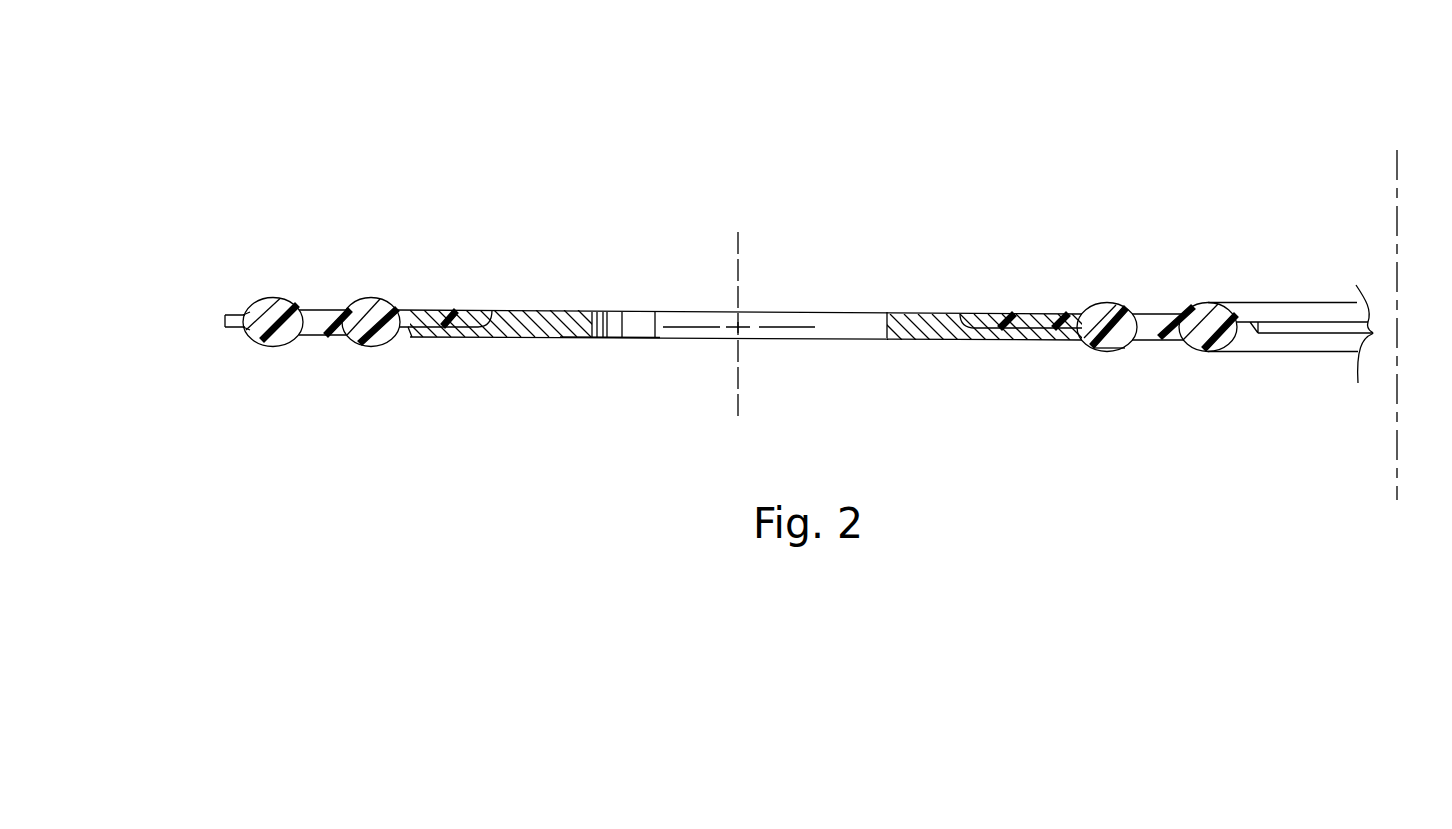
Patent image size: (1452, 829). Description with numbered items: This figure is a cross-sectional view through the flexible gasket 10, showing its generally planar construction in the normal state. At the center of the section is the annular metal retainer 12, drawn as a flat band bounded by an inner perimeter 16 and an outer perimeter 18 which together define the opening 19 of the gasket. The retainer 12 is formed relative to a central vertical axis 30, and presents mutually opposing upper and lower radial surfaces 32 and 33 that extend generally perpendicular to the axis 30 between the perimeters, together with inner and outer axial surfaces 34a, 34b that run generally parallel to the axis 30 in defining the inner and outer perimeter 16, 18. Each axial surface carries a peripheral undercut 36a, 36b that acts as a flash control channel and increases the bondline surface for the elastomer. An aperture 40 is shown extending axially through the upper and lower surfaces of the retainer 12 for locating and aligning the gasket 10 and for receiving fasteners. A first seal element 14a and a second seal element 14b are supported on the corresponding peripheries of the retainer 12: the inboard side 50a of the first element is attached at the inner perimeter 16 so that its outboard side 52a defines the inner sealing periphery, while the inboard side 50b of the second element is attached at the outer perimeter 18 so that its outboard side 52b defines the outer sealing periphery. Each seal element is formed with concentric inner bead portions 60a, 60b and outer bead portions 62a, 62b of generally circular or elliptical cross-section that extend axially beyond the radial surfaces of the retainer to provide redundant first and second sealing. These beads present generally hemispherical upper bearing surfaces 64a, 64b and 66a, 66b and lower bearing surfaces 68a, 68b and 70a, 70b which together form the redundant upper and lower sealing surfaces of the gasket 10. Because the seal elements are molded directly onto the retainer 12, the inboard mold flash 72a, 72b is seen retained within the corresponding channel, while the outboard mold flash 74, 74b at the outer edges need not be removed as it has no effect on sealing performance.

The gasket 10 is at (1198, 84).
The retainer 12 is at (547, 310).
The first seal element 14a is at (1163, 303).
The second seal element 14b is at (326, 310).
The inner perimeter 16 is at (1093, 348).
The outer perimeter 18 is at (400, 340).
The opening 19 is at (1390, 310).
The central vertical axis 30 is at (1397, 192).
The upper radial surface 32 is at (575, 310).
The lower radial surface 33 is at (575, 338).
The inner axial surface 34a is at (1082, 316).
The outer axial surface 34b is at (392, 305).
The peripheral undercut 36a is at (997, 313).
The peripheral undercut 36b is at (470, 310).
The aperture 40 is at (790, 300).
The inboard side 50a is at (960, 313).
The inboard side 50b is at (505, 311).
The outboard side 52a is at (1236, 304).
The outboard side 52b is at (246, 305).
The inner bead portion 60a is at (1080, 348).
The inner bead portion 60b is at (345, 338).
The outer bead portion 62a is at (1158, 348).
The outer bead portion 62b is at (252, 340).
The upper bearing surface 64a is at (1098, 303).
The upper bearing surface 64b is at (372, 299).
The upper bearing surface 66a is at (1200, 300).
The upper bearing surface 66b is at (276, 298).
The lower bearing surface 68a is at (1113, 350).
The lower bearing surface 68b is at (376, 347).
The lower bearing surface 70a is at (1200, 356).
The lower bearing surface 70b is at (270, 347).
The inboard mold flash 72a is at (1003, 313).
The inboard mold flash 72b is at (448, 312).
The outboard mold flash 74 is at (1376, 332).
The outboard mold flash 74b is at (222, 319).